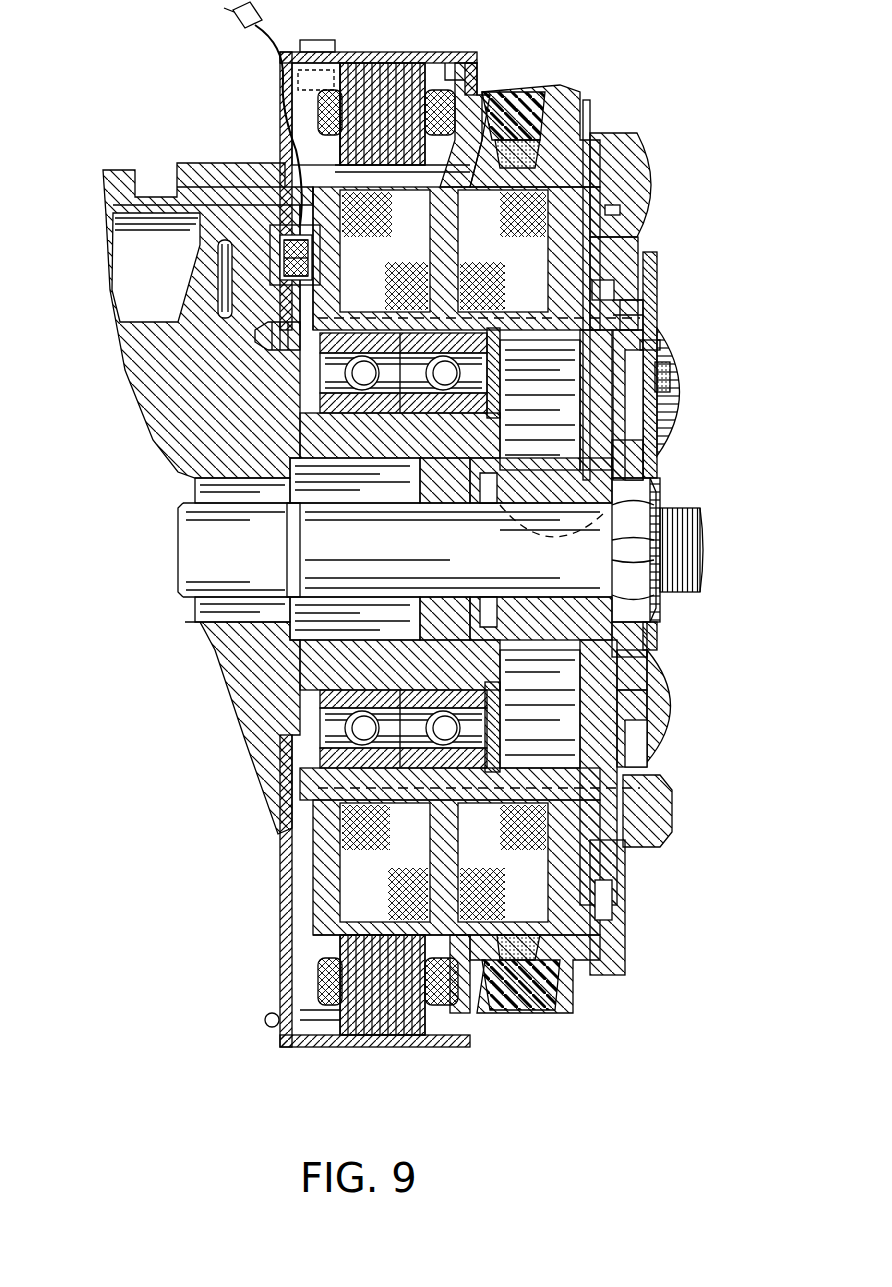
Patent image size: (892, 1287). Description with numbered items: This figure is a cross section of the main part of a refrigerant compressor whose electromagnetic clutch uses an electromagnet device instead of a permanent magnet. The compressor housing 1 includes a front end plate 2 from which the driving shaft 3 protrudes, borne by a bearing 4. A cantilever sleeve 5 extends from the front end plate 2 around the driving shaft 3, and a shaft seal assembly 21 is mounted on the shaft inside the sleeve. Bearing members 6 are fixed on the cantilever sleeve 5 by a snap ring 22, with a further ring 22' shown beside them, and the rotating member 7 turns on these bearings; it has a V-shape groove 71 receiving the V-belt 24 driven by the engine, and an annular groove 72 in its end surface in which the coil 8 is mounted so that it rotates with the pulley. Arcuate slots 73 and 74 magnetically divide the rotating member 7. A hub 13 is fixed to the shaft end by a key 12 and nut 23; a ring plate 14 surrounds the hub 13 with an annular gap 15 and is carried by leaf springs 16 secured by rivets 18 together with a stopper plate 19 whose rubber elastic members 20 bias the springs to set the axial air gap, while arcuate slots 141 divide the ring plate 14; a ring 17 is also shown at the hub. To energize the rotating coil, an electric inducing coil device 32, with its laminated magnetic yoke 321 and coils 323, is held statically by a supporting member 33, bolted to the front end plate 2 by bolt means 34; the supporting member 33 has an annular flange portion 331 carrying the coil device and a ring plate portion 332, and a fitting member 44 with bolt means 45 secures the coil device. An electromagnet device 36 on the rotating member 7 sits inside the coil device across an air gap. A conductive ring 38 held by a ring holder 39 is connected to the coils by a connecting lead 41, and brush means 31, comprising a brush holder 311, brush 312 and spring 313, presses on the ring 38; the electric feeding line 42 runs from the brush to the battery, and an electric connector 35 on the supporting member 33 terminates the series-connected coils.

The compressor housing 1 is at (132, 178).
The front end plate 2 is at (185, 200).
The driving shaft 3 is at (592, 545).
The bearing 4 is at (195, 490).
The cantilever sleeve 5 is at (508, 668).
The bearing members 6 is at (320, 723).
The rotating member 7 is at (645, 322).
The coil 8 is at (478, 195).
The key 12 is at (632, 500).
The hub 13 is at (596, 478).
The ring plate 14 is at (632, 250).
The annular gap 15 is at (662, 345).
The leaf springs 16 is at (648, 262).
The ring 17 is at (632, 682).
The rivets 18 is at (676, 422).
The stopper plate 19 is at (650, 305).
The elastic members 20 is at (672, 368).
The shaft seal assembly 21 is at (478, 640).
The snap ring 22 is at (515, 725).
The bearing 22' is at (476, 328).
The nut 23 is at (642, 545).
The V-belt 24 is at (530, 100).
The brush means 31 is at (275, 270).
The electric inducing coil device 32 is at (328, 148).
The supporting member 33 is at (272, 96).
The bolt means 34 is at (265, 340).
The electric connector 35 is at (308, 42).
The electromagnet device 36 is at (318, 212).
The conductive ring 38 is at (270, 228).
The ring holder 39 is at (307, 283).
The connecting lead 41 is at (225, 200).
The electric feeding line 42 is at (262, 38).
The fitting member 44 is at (420, 1048).
The bolt means 45 is at (268, 1028).
The V-shape groove 71 is at (535, 152).
The annular groove 72 is at (600, 235).
The arcuate slots 73 is at (652, 282).
The arcuate slots 74 is at (612, 200).
The arcuate slots 141 is at (618, 860).
The brush holder 311 is at (270, 255).
The brush 312 is at (283, 250).
The spring 313 is at (272, 262).
The laminated magnetic yoke 321 is at (376, 65).
The coils 323 is at (480, 110).
The annular flange portion 331 is at (432, 60).
The ring plate portion 332 is at (282, 118).